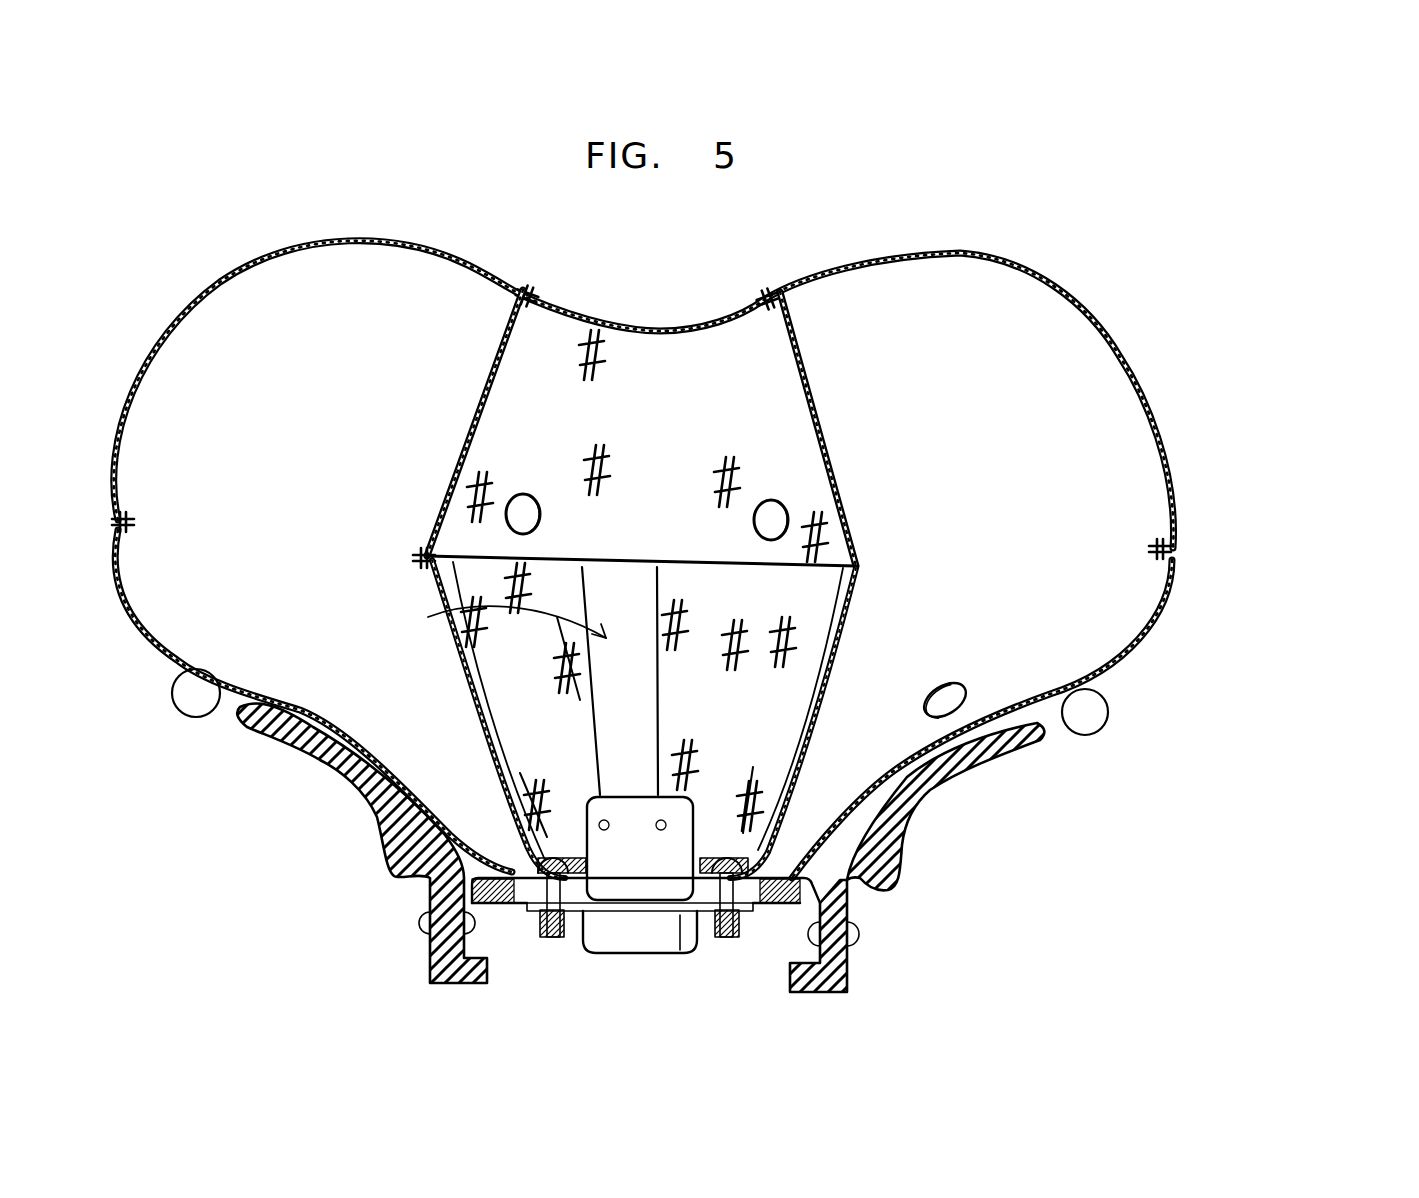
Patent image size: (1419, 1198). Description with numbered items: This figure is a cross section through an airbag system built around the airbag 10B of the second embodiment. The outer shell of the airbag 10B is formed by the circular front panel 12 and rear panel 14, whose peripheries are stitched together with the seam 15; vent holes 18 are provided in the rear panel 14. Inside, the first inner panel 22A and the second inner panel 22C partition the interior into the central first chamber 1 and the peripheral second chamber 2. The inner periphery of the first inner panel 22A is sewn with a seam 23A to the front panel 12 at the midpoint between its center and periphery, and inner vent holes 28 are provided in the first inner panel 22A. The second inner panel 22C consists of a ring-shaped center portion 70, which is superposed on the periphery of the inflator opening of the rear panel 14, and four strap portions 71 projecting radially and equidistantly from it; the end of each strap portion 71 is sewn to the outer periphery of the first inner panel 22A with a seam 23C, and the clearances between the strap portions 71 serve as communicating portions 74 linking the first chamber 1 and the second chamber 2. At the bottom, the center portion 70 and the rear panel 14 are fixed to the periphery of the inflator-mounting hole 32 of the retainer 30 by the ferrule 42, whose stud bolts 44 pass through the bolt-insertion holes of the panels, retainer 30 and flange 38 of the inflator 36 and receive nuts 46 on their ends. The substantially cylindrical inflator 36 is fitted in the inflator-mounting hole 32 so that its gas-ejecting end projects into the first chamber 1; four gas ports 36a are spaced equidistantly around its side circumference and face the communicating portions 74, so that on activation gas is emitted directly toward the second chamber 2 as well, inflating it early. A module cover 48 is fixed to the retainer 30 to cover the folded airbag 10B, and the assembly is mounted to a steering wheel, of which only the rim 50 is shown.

The airbag 10B is at (746, 559).
The front panel 12 is at (1142, 392).
The rear panel 14 is at (1135, 628).
The seam 15 is at (125, 532).
The vent holes 18 is at (958, 692).
The first inner panel 22A is at (478, 393).
The second inner panel 22C is at (834, 620).
The seam 23A is at (530, 298).
The seam 23C is at (420, 550).
The inner vent holes 28 is at (520, 494).
The first chamber 1 is at (630, 528).
The second chamber 2 is at (254, 505).
The retainer 30 is at (840, 897).
The inflator-mounting hole 32 is at (680, 935).
The inflator 36 is at (650, 950).
The gas ports 36a is at (609, 827).
The flange 38 is at (600, 912).
The ferrule 42 is at (705, 855).
The stud bolts 44 is at (555, 940).
The nuts 46 is at (528, 915).
The module cover 48 is at (296, 748).
The rim 50 is at (205, 718).
The center portion 70 is at (570, 862).
The strap portions 71 is at (502, 680).
The communicating portions 74 is at (428, 617).